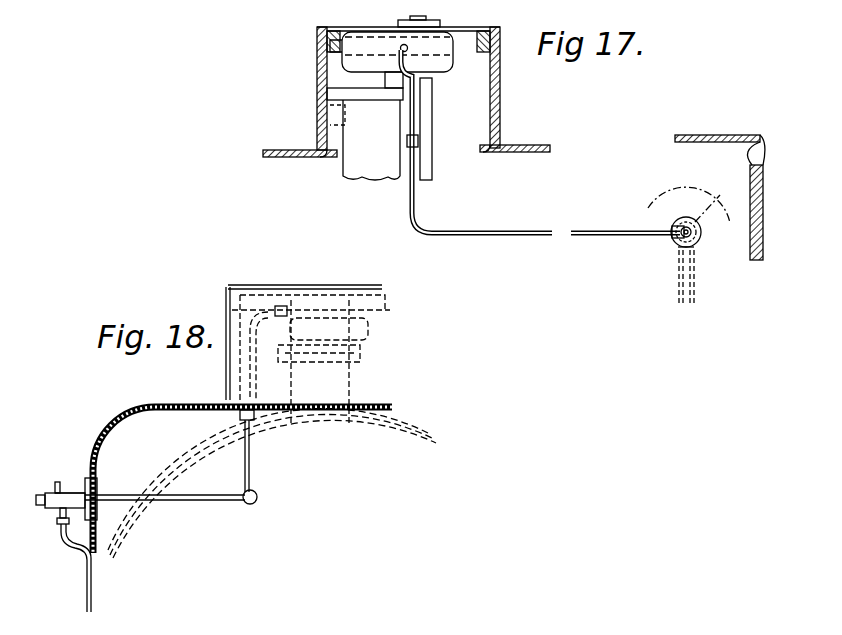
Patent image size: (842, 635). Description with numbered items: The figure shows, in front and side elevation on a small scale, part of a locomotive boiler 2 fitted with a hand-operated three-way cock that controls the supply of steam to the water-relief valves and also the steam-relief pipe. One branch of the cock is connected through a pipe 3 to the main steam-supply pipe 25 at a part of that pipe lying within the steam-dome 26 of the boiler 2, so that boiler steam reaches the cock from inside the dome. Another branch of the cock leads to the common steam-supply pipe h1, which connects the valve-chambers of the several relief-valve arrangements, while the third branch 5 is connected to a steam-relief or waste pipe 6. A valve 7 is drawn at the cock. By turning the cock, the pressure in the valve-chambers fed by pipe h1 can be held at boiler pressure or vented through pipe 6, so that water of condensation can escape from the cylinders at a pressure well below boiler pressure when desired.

In FIG. 17, the boiler 2 is at (514, 197).
In FIG. 18, the boiler 2 is at (264, 482).
In FIG. 17, the pipe 3 is at (583, 231).
In FIG. 18, the pipe 3 is at (171, 457).
In FIG. 18, the third branch 5 is at (62, 506).
In FIG. 17, the steam-relief pipe 6 is at (689, 245).
In FIG. 18, the steam-relief pipe 6 is at (85, 585).
In FIG. 18, the valve stem 7 is at (64, 490).
In FIG. 17, the main steam-supply pipe 25 is at (365, 134).
In FIG. 18, the main steam-supply pipe 25 is at (319, 368).
In FIG. 17, the steam-dome 26 is at (403, 106).
In FIG. 18, the steam-dome 26 is at (317, 355).
In FIG. 17, the common steam-supply pipe h1 is at (676, 289).